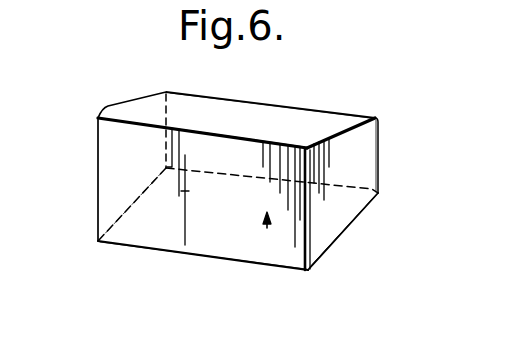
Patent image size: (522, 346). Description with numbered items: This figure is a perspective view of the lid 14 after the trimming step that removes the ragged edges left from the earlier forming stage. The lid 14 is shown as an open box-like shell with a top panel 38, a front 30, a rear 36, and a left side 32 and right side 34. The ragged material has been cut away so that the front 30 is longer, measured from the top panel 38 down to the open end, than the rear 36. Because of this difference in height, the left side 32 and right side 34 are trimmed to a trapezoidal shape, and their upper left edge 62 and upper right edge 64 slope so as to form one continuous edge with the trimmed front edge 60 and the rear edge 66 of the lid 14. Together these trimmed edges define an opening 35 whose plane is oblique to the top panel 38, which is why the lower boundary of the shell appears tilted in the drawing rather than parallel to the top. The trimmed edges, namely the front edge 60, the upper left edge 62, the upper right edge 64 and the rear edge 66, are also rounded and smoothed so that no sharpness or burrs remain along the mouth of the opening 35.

The lid 14 is at (84, 186).
The front 30 is at (195, 221).
The left side 32 is at (113, 158).
The right side 34 is at (344, 203).
The opening 35 is at (266, 230).
The rear 36 is at (303, 130).
The top panel 38 is at (227, 113).
The trimmed front edge 60 is at (228, 262).
The upper left edge 62 is at (128, 222).
The upper right edge 64 is at (339, 240).
The rear edge 66 is at (343, 190).